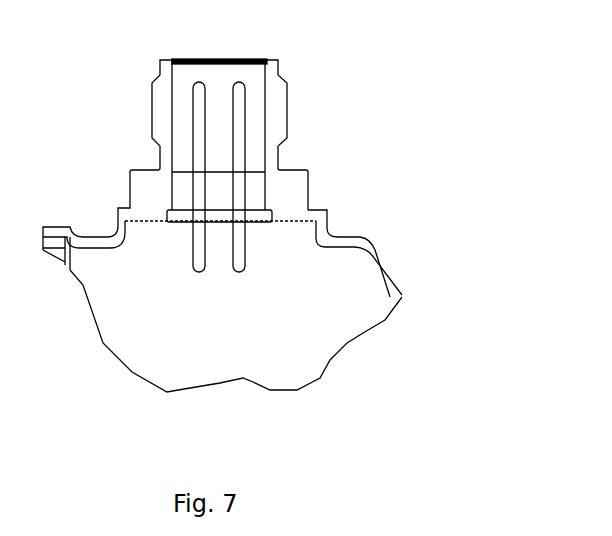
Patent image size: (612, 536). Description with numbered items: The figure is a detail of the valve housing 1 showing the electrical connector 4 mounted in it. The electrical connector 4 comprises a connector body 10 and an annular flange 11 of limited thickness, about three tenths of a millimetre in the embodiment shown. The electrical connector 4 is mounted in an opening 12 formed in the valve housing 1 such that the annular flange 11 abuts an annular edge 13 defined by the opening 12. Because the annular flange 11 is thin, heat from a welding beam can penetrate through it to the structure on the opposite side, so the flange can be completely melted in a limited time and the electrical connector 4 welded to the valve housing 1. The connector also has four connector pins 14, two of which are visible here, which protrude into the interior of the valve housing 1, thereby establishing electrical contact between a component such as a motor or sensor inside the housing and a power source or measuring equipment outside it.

The valve housing 1 is at (385, 258).
The electrical connector 4 is at (303, 92).
The connector body 10 is at (160, 112).
The annular flange 11 is at (317, 212).
The opening 12 is at (128, 230).
The annular edge 13 is at (318, 213).
The connector pins 14 is at (200, 250).